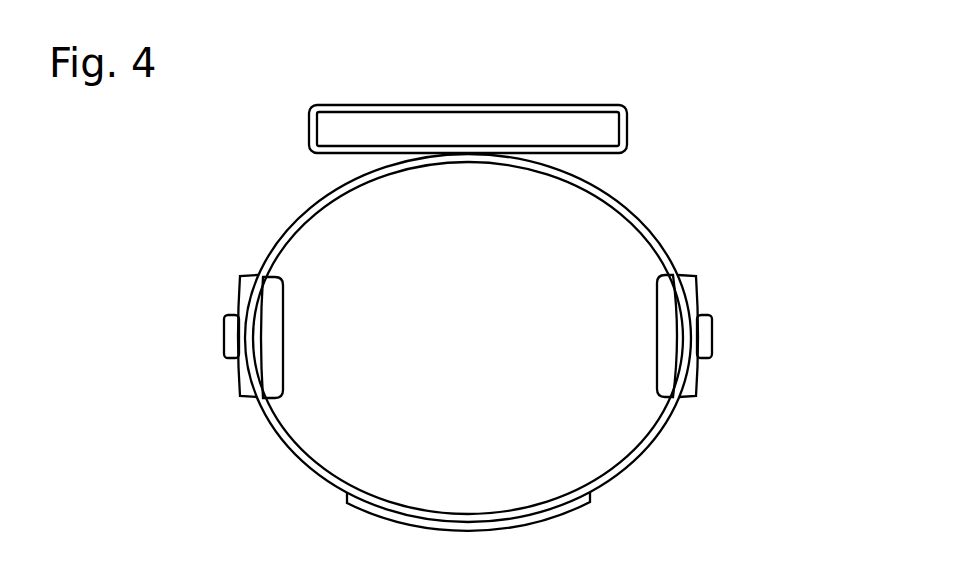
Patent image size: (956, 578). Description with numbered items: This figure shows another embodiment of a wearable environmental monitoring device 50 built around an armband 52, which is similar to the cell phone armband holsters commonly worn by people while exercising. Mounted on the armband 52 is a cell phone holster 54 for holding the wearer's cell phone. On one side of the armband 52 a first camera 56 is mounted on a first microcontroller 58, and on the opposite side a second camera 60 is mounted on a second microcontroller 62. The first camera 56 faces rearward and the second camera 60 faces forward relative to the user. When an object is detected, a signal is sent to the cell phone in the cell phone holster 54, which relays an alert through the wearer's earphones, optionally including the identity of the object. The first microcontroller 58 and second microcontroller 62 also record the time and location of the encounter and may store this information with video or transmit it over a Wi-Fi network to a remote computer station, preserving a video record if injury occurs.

The wearable environmental monitoring device 50 is at (465, 285).
The armband 52 is at (330, 208).
The cell phone holster 54 is at (500, 113).
The first camera 56 is at (223, 342).
The first microcontroller 58 is at (272, 341).
The second camera 60 is at (707, 334).
The second microcontroller 62 is at (670, 334).